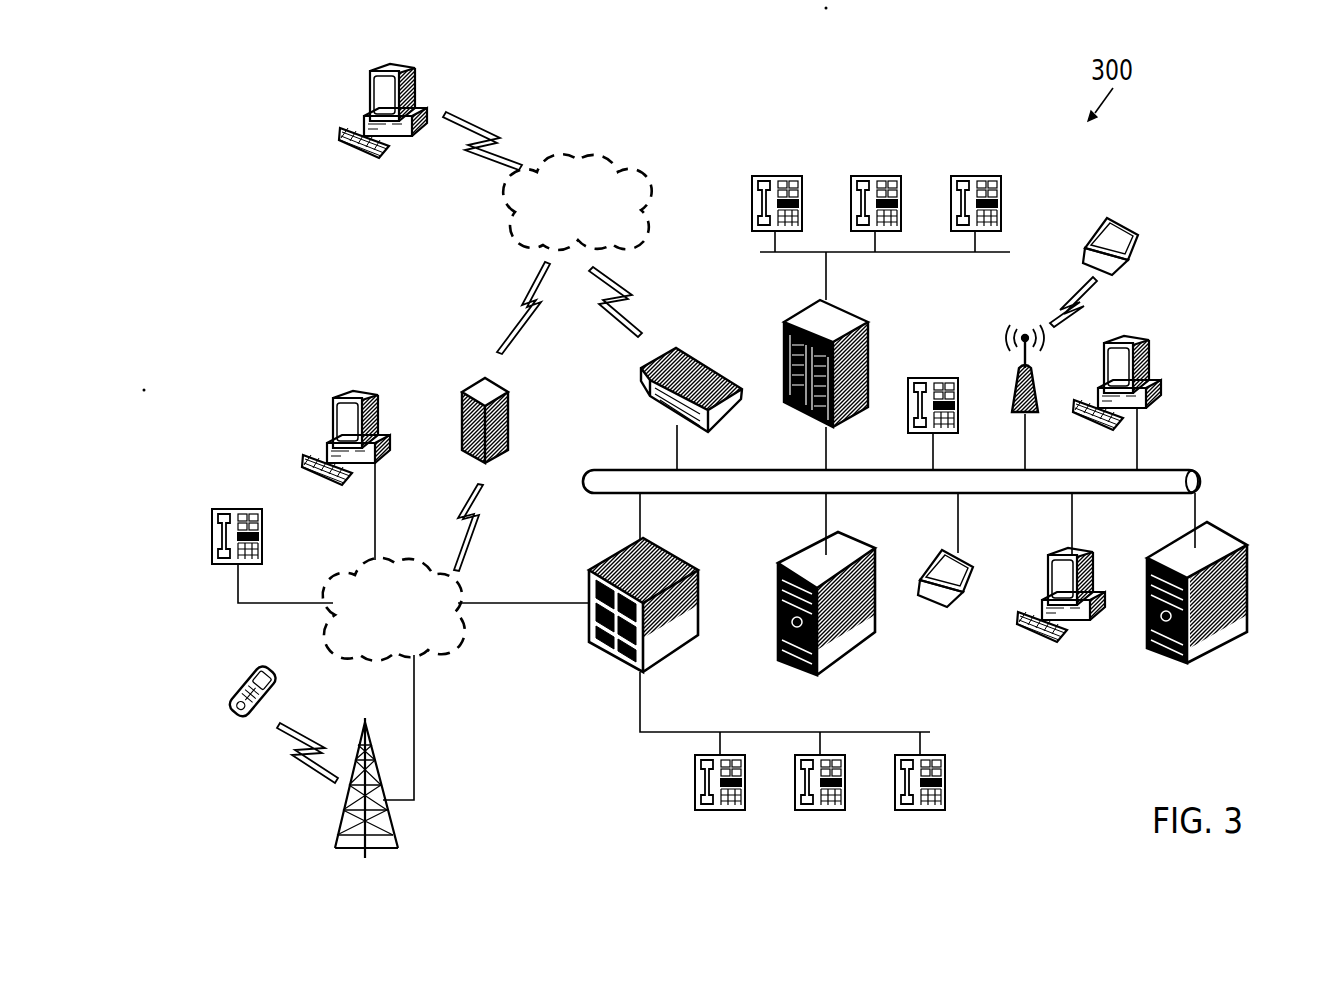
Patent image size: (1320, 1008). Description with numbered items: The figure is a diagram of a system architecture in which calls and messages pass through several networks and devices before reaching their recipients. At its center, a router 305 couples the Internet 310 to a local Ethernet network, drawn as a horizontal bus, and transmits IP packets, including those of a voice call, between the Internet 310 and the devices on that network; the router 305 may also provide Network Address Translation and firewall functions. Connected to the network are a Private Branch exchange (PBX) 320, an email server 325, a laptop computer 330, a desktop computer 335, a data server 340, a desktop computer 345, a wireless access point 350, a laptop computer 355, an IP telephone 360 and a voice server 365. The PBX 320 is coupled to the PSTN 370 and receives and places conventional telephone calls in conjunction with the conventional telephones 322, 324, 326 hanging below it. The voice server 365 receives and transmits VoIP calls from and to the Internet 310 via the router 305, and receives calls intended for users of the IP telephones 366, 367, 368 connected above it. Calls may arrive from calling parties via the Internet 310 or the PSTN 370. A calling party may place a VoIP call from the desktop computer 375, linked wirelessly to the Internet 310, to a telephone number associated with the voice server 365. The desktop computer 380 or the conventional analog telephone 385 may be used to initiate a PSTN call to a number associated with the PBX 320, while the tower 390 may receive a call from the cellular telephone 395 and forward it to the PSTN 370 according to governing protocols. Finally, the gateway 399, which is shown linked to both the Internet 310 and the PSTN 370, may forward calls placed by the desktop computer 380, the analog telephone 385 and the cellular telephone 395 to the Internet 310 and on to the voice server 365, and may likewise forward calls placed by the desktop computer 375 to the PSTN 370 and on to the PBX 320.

The router 305 is at (690, 358).
The Internet 310 is at (632, 188).
The Private Branch exchange (PBX) 320 is at (610, 556).
The conventional telephone 322 is at (692, 778).
The conventional telephone 324 is at (792, 778).
The conventional telephone 326 is at (892, 778).
The email server 325 is at (773, 612).
The laptop computer 330 is at (933, 606).
The desktop computer 335 is at (1027, 630).
The data server 340 is at (1160, 657).
The desktop computer 345 is at (1148, 360).
The wireless access point 350 is at (1013, 400).
The laptop computer 355 is at (1125, 217).
The IP telephone 360 is at (937, 378).
The voice server 365 is at (851, 323).
The IP telephone 366 is at (802, 205).
The IP telephone 367 is at (901, 205).
The IP telephone 368 is at (1001, 205).
The PSTN 370 is at (423, 650).
The desktop computer 375 is at (397, 133).
The desktop computer 380 is at (345, 398).
The conventional analog telephone 385 is at (214, 534).
The tower 390 is at (338, 833).
The cellular telephone 395 is at (242, 715).
The gateway 399 is at (473, 385).